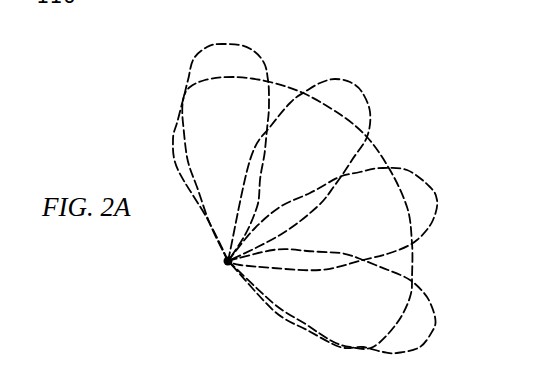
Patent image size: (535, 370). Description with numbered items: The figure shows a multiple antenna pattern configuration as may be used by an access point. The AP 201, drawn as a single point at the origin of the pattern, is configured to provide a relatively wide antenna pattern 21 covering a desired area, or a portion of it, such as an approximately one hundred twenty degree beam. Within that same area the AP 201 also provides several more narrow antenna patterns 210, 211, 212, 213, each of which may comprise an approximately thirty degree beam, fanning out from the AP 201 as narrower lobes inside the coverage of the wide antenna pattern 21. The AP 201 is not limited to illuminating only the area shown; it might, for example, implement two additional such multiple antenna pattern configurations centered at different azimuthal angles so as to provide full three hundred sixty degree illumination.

The AP 201 is at (224, 262).
The wide antenna pattern 21 is at (412, 253).
The narrow antenna pattern 210 is at (218, 45).
The narrow antenna pattern 211 is at (343, 80).
The narrow antenna pattern 212 is at (438, 200).
The narrow antenna pattern 213 is at (434, 330).